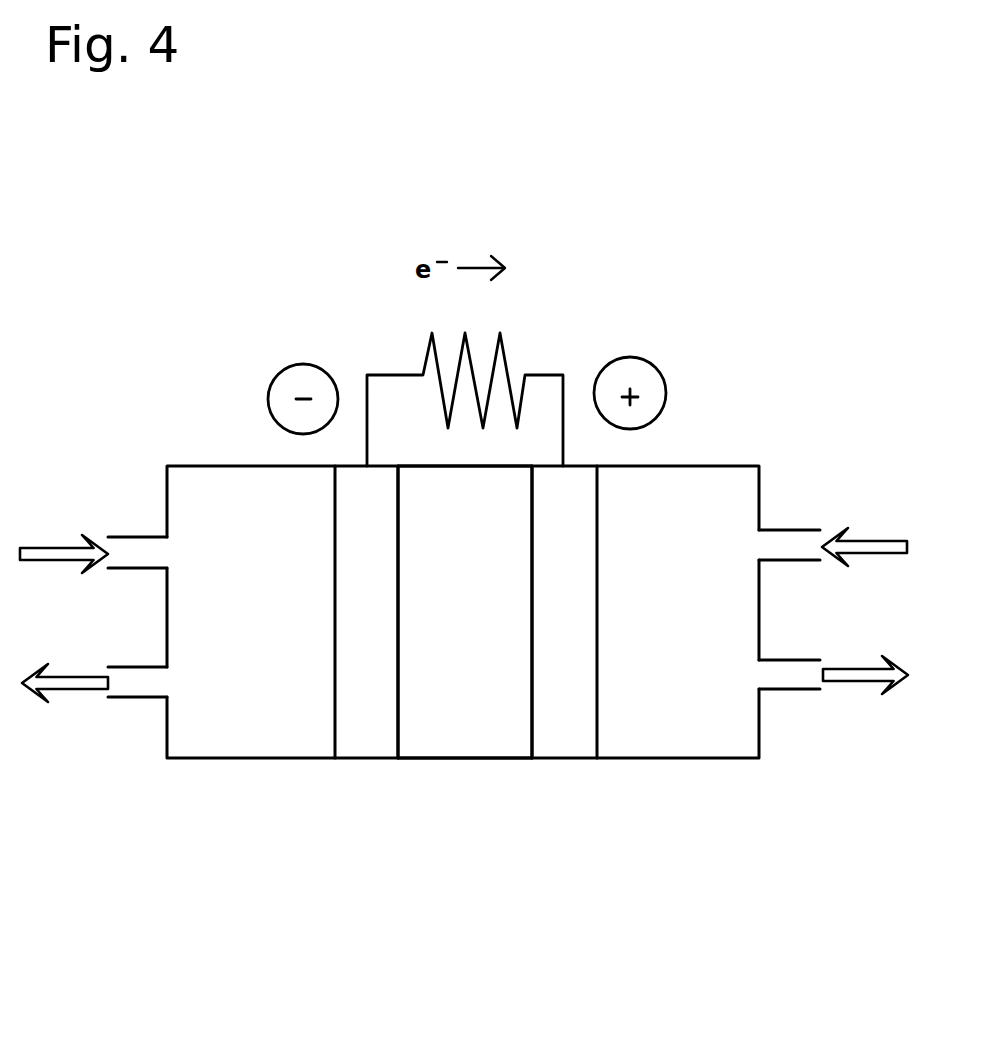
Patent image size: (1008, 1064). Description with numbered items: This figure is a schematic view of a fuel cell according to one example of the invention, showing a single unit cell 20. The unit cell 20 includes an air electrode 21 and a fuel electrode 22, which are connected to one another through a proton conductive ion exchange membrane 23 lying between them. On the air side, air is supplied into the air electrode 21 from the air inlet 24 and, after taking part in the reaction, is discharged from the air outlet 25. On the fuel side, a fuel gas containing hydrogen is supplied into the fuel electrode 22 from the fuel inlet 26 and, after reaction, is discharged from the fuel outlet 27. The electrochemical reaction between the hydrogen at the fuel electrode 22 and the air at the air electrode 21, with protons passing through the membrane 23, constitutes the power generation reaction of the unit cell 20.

The unit cell 20 is at (713, 310).
The air electrode 21 is at (565, 737).
The fuel electrode 22 is at (366, 742).
The proton conductive ion exchange membrane 23 is at (478, 735).
The air inlet 24 is at (795, 528).
The air outlet 25 is at (795, 690).
The fuel inlet 26 is at (132, 537).
The fuel outlet 27 is at (125, 697).